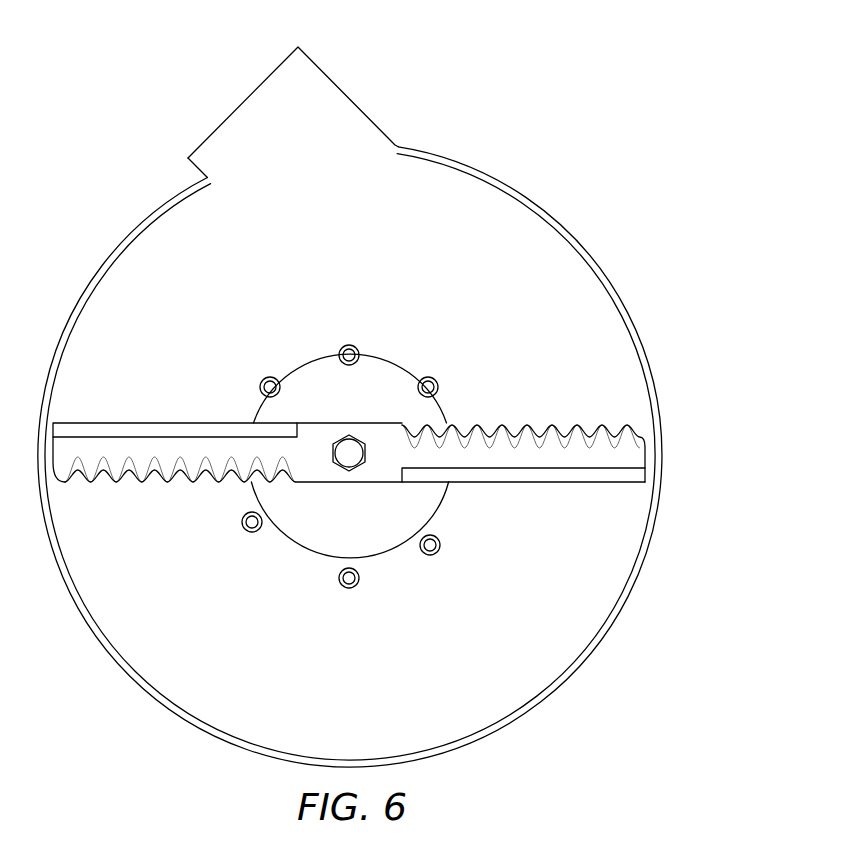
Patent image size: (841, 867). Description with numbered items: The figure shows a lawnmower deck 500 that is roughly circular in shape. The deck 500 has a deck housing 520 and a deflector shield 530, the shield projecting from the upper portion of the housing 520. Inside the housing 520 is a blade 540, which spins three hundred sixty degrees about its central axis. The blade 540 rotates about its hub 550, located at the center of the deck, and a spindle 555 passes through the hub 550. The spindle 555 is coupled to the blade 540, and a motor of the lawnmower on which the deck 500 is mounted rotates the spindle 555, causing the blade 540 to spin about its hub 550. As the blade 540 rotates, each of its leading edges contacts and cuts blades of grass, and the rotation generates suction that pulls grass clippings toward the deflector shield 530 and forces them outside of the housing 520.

The lawnmower deck 500 is at (658, 228).
The deck housing 520 is at (122, 237).
The deflector shield 530 is at (245, 100).
The blade 540 is at (532, 455).
The hub 550 is at (349, 453).
The spindle 555 is at (349, 453).